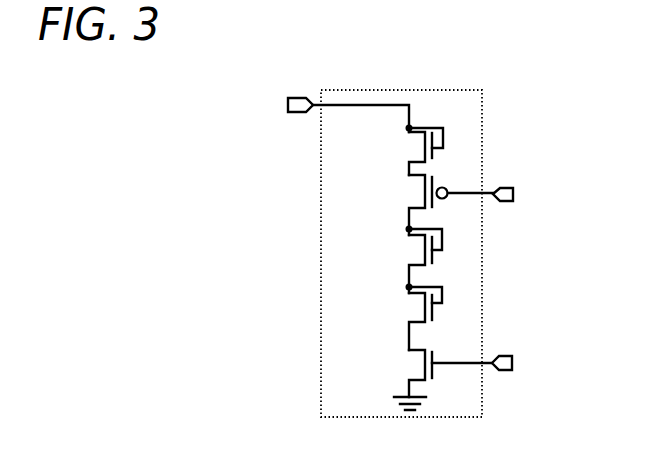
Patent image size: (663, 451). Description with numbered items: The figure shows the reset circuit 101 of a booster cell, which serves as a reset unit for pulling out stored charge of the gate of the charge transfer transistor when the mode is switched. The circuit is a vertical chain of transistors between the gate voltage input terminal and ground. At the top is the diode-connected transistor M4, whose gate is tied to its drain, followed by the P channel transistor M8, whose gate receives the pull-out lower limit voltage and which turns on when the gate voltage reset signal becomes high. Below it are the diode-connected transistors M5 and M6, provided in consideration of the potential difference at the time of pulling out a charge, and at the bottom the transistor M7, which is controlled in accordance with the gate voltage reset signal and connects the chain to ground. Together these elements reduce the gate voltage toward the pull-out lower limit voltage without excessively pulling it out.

The reset circuit 101 is at (464, 90).
The diode-connected transistor M4 is at (401, 151).
The P channel transistor M8 is at (474, 205).
The diode-connected transistor M5 is at (401, 261).
The diode-connected transistor M6 is at (401, 318).
The transistor M7 is at (473, 373).